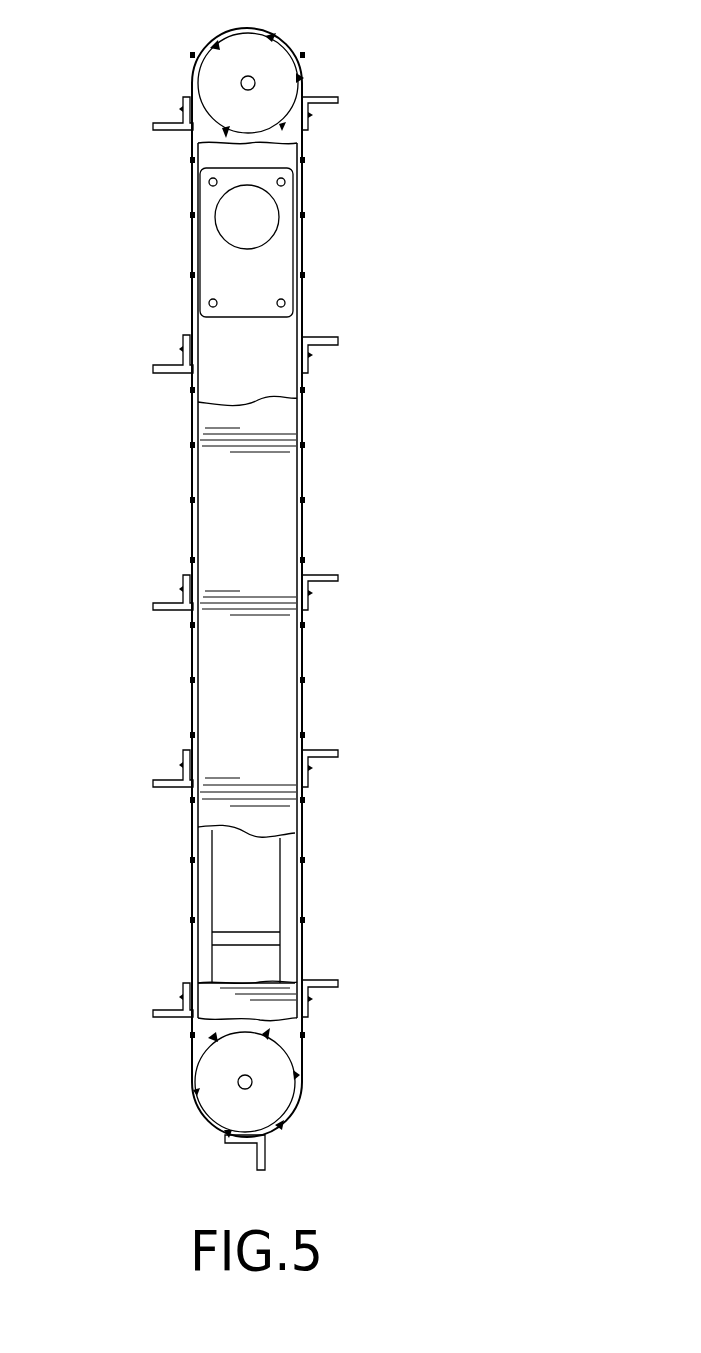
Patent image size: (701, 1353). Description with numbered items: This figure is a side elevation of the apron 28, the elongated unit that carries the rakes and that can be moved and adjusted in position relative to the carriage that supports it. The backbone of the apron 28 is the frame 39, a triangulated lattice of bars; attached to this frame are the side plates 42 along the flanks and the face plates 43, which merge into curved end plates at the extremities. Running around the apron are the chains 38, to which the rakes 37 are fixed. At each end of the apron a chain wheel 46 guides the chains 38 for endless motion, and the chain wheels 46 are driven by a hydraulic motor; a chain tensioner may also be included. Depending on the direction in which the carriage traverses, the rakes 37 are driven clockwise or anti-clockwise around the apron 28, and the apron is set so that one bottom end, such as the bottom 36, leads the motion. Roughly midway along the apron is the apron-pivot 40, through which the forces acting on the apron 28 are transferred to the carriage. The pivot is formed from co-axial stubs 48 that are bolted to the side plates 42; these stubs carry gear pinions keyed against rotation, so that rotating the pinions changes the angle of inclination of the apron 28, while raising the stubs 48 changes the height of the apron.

The apron 28 is at (330, 705).
The bottom of the apron 36 is at (272, 1130).
The rakes 37 is at (315, 572).
The chains 38 is at (305, 297).
The frame 39 is at (253, 928).
The apron-pivot 40 is at (238, 218).
The side plates 42 is at (273, 383).
The face plates 43 is at (193, 895).
The chain wheels 46 is at (275, 50).
The co-axial stubs 48 is at (240, 247).